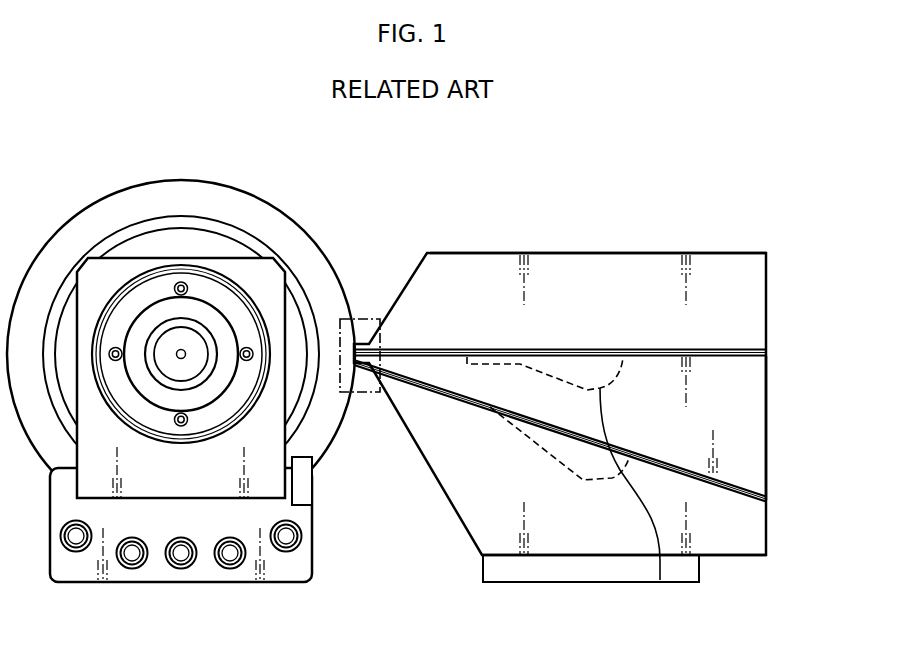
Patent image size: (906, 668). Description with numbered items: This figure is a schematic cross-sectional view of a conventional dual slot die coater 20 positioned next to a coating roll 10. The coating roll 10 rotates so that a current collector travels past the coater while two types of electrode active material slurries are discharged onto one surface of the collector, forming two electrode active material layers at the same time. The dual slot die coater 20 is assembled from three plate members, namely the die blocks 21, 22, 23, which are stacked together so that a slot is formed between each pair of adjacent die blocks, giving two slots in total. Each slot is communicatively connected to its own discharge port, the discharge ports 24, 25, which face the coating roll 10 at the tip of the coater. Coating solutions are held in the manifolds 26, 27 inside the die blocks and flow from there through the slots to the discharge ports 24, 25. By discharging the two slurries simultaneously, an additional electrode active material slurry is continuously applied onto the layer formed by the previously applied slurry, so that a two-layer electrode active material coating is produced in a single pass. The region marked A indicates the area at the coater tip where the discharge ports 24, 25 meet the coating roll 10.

The coating roll 10 is at (181, 183).
The dual slot die coater 20 is at (603, 230).
The die block 21 is at (758, 527).
The die block 22 is at (766, 421).
The die block 23 is at (766, 301).
The discharge port 24 is at (375, 366).
The discharge port 25 is at (380, 349).
The manifold 26 is at (583, 480).
The manifold 27 is at (660, 580).
The coupling region A is at (354, 319).